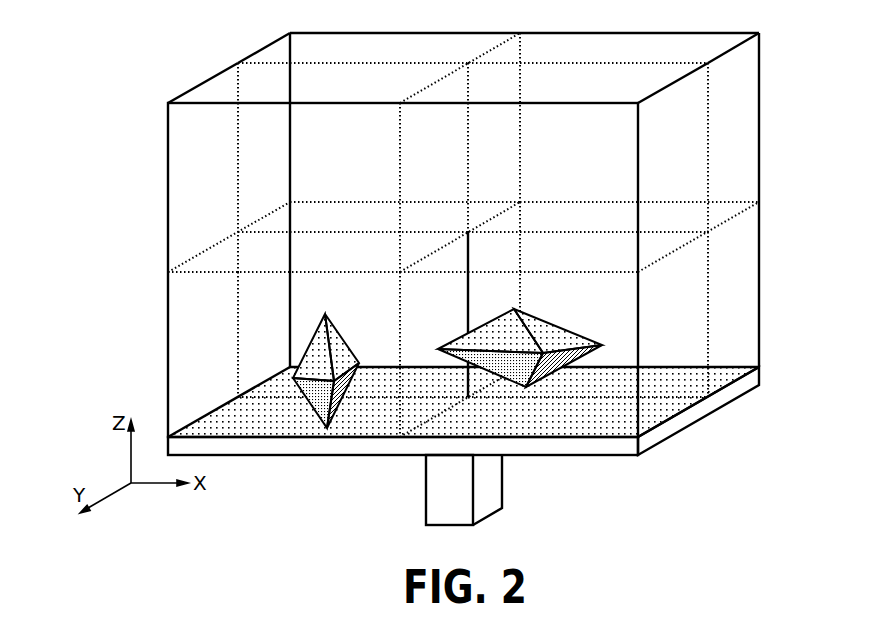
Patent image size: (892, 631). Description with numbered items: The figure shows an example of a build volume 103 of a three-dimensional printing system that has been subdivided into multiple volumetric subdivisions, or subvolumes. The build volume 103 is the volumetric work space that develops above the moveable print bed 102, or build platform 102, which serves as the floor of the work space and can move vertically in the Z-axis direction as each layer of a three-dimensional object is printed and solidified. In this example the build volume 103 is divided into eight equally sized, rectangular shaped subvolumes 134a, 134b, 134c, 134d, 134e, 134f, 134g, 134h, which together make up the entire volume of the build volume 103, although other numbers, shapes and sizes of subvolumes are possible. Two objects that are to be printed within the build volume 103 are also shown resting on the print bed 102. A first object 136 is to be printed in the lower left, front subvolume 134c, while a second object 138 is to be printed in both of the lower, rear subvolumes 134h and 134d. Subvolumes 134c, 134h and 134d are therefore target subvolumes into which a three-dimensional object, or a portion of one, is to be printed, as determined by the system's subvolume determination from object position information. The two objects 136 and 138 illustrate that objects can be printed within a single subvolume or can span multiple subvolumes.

The print bed 102 is at (665, 443).
The build volume 103 is at (105, 27).
The subvolume 134a is at (207, 93).
The subvolume 134b is at (267, 55).
The subvolume 134c is at (216, 263).
The subvolume 134d is at (281, 224).
The subvolume 134e is at (683, 147).
The subvolume 134f is at (740, 73).
The subvolume 134g is at (682, 326).
The subvolume 134h is at (738, 251).
The first object 136 is at (315, 403).
The second object 138 is at (538, 325).